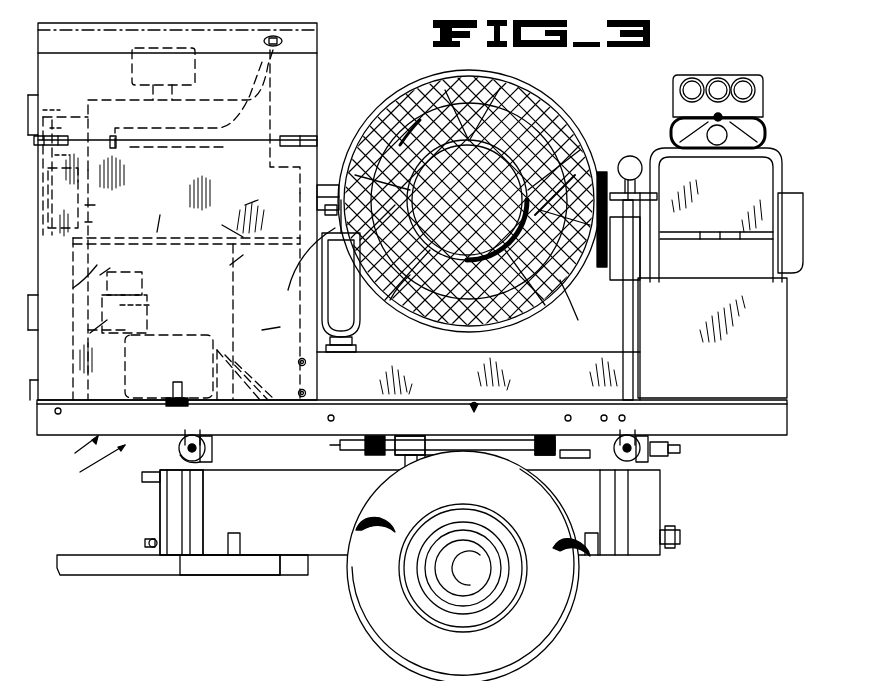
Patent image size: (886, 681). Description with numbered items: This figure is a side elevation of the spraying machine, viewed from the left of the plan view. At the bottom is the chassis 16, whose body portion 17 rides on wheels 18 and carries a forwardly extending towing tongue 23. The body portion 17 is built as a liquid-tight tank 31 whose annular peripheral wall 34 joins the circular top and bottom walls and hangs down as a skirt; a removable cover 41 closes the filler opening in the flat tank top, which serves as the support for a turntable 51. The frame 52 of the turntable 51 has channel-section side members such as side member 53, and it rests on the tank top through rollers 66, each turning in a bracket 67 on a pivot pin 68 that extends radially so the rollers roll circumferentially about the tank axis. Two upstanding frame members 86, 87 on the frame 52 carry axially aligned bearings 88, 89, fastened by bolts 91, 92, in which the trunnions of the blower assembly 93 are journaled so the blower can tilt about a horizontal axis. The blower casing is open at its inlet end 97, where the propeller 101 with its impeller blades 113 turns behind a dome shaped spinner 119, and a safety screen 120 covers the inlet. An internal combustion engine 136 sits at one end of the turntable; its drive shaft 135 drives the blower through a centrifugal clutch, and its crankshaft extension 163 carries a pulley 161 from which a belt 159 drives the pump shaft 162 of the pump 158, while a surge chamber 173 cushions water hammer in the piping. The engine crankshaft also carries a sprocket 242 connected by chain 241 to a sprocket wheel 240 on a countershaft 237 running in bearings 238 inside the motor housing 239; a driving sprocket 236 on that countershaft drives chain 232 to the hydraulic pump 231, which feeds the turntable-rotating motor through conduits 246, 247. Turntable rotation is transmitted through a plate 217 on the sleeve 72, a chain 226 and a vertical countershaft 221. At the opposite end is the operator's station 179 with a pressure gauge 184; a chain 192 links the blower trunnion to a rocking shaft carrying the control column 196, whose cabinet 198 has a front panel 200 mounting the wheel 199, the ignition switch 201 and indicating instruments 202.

The chassis 16 is at (245, 575).
The body portion 17 is at (668, 525).
The wheels 18 is at (537, 635).
The towing tongue 23 is at (110, 572).
The tank 31 is at (246, 527).
The annular peripheral wall 34 is at (178, 519).
The removable cover 41 is at (590, 452).
The turntable 51 is at (86, 466).
The turntable frame 52 is at (73, 452).
The side member 53 is at (116, 418).
The rollers 66 is at (182, 460).
The bracket 67 is at (196, 440).
The pivot pins 68 is at (212, 455).
The sleeve 72 is at (405, 462).
The upstanding frame member 86 is at (615, 252).
The upstanding frame member 87 is at (302, 263).
The bearing 88 is at (615, 183).
The bearing 89 is at (320, 191).
The bolts 91 is at (633, 205).
The bolts 92 is at (325, 207).
The blower assembly 93 is at (548, 121).
The inlet end 97 is at (432, 83).
The propeller 101 is at (405, 141).
The impeller blades 113 is at (410, 321).
The spinner 119 is at (570, 131).
The safety screen 120 is at (565, 307).
The engine drive shaft 135 is at (235, 192).
The internal combustion engine 136 is at (142, 172).
The pump 158 is at (160, 301).
The belt 159 is at (122, 261).
The pulley 161 is at (109, 216).
The pump shaft 162 is at (115, 323).
The crankshaft extension 163 is at (112, 199).
The surge chamber 173 is at (322, 297).
The operator's station 179 is at (658, 126).
The pressure gauge 184 is at (645, 171).
The chain 192 is at (623, 261).
The control column 196 is at (748, 80).
The cabinet 198 is at (752, 101).
The wheel 199 is at (740, 150).
The front panel 200 is at (740, 112).
The ignition switch 201 is at (712, 116).
The indicating instruments 202 is at (716, 80).
The plate 217 is at (432, 462).
The vertical countershaft 221 is at (547, 456).
The chain 226 is at (466, 456).
The hydraulic pump 231 is at (145, 362).
The chain 232 is at (279, 322).
The driving sprocket 236 is at (216, 220).
The countershaft 237 is at (145, 184).
The bearings 238 is at (138, 279).
The motor housing 239 is at (290, 373).
The sprocket wheel 240 is at (57, 105).
The chain 241 is at (68, 123).
The sprocket 242 is at (73, 153).
The conduit 246 is at (254, 362).
The conduit 247 is at (262, 400).